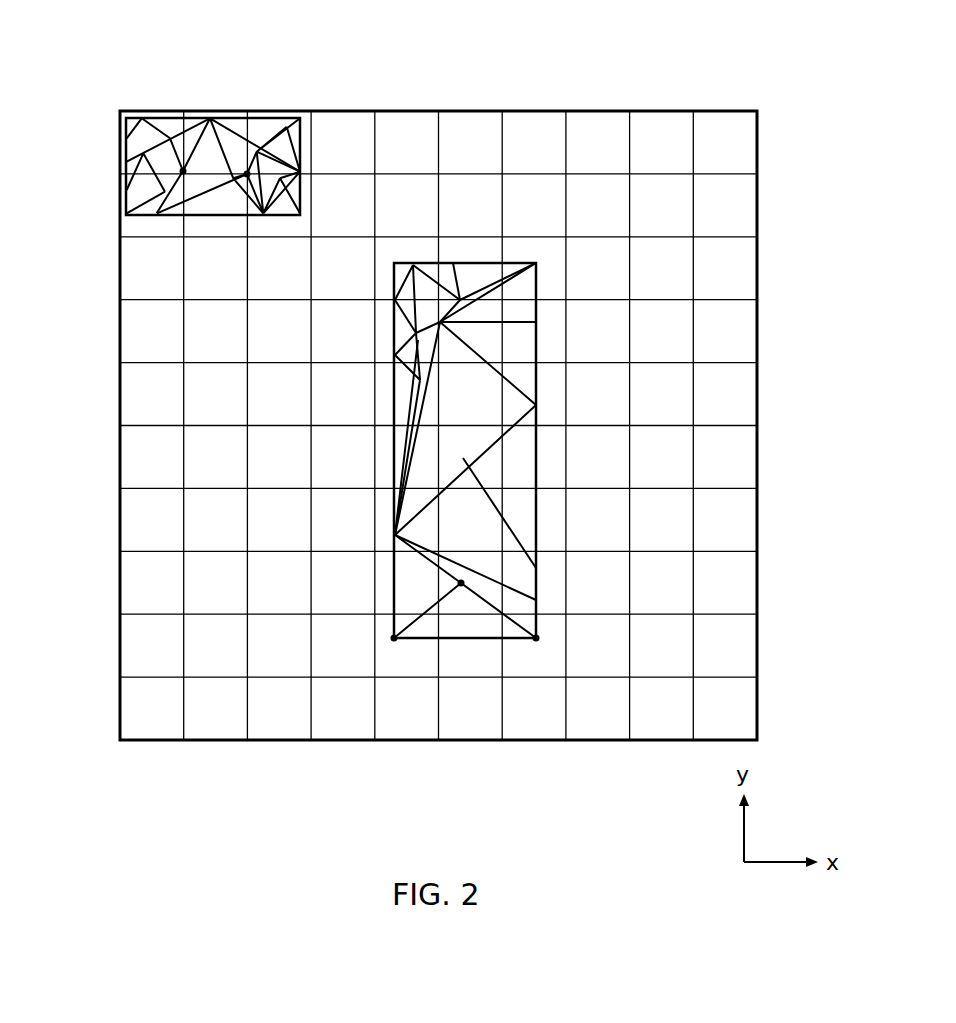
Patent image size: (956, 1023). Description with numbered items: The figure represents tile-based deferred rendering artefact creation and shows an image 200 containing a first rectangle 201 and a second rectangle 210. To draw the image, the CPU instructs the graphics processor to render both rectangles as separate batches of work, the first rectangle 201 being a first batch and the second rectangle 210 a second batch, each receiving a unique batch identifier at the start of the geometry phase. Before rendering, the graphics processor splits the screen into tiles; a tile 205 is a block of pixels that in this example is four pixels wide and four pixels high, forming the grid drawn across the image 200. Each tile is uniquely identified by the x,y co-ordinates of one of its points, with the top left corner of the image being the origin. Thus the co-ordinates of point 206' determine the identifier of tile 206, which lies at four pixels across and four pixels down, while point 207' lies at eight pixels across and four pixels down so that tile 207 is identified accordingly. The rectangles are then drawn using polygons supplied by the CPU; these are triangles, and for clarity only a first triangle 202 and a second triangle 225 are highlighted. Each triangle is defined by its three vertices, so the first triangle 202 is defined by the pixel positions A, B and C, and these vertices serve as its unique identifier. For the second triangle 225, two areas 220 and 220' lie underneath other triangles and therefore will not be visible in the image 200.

The image 200 is at (683, 68).
The first rectangle 201 is at (537, 346).
The first triangle 202 is at (458, 625).
The tile 205 is at (735, 146).
The tile 206 is at (154, 135).
The point 206' is at (107, 228).
The tile 207 is at (228, 132).
The point 207' is at (150, 259).
The second rectangle 210 is at (214, 133).
The area of triangle 220 is at (287, 325).
The area of triangle 220' is at (442, 191).
The second triangle 225 is at (395, 353).